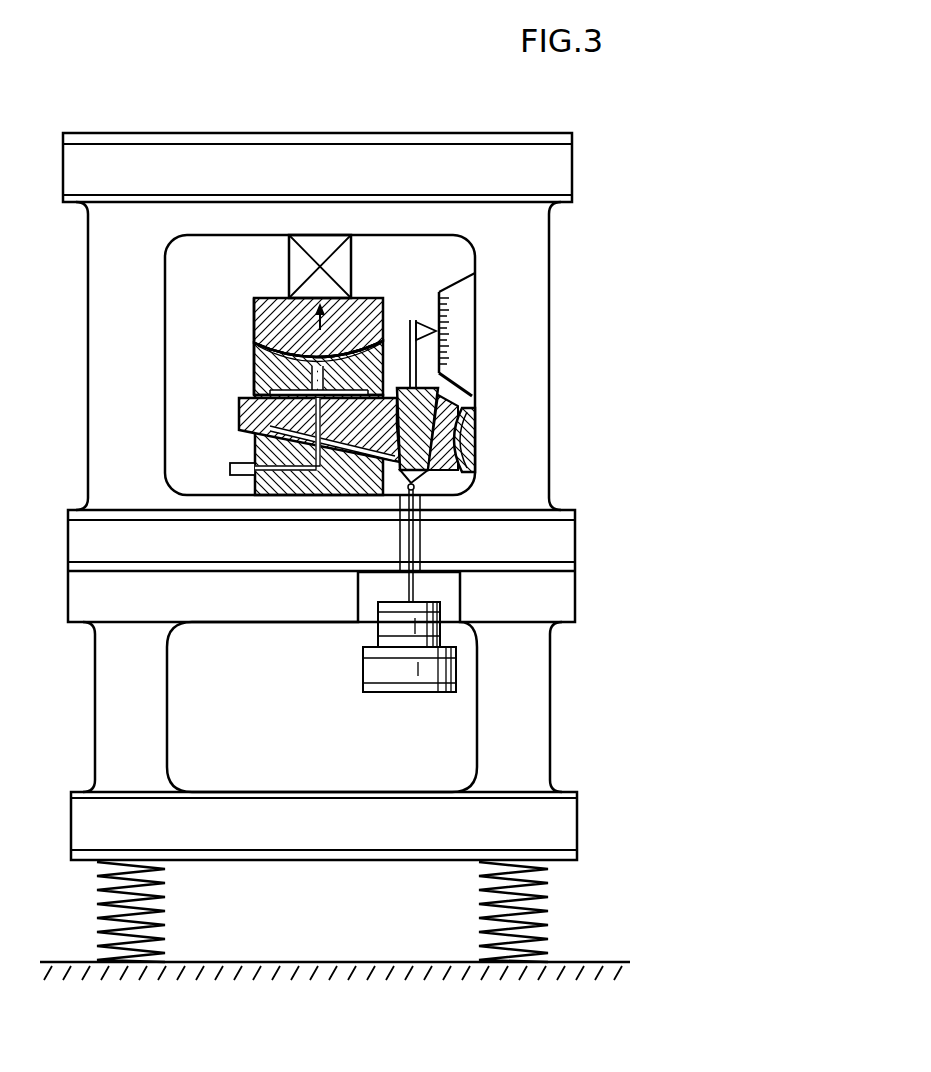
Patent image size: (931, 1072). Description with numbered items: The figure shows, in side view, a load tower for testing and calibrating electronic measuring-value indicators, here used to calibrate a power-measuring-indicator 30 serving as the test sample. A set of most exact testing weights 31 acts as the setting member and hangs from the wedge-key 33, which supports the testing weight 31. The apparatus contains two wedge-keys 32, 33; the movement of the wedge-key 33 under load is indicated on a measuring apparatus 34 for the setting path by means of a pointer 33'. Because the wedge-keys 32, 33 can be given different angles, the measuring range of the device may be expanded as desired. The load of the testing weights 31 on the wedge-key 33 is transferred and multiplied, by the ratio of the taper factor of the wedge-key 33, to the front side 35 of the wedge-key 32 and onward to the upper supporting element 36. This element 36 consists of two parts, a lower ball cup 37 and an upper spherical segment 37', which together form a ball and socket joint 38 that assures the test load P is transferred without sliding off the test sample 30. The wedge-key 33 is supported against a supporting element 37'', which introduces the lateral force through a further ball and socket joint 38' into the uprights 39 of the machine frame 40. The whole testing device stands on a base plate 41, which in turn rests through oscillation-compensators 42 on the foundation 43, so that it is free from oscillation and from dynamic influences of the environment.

The power-measuring-indicator 30 is at (305, 240).
The testing weights 31 is at (372, 672).
The wedge-key 32 is at (241, 413).
The wedge-key 33 is at (517, 375).
The pointer 33' is at (422, 315).
The measuring apparatus 34 is at (457, 318).
The front side 35 is at (400, 385).
The upper supporting element 36 is at (285, 317).
The lower ball cup 37 is at (294, 418).
The upper spherical segment 37' is at (237, 327).
The supporting element 37'' is at (518, 430).
The ball and socket joint 38 is at (291, 333).
The ball and socket joint 38' is at (528, 440).
The uprights 39 is at (508, 464).
The machine frame 40 is at (342, 157).
The base plate 41 is at (535, 700).
The oscillation-compensators 42 is at (167, 912).
The foundation 43 is at (360, 960).
The test load P is at (347, 328).